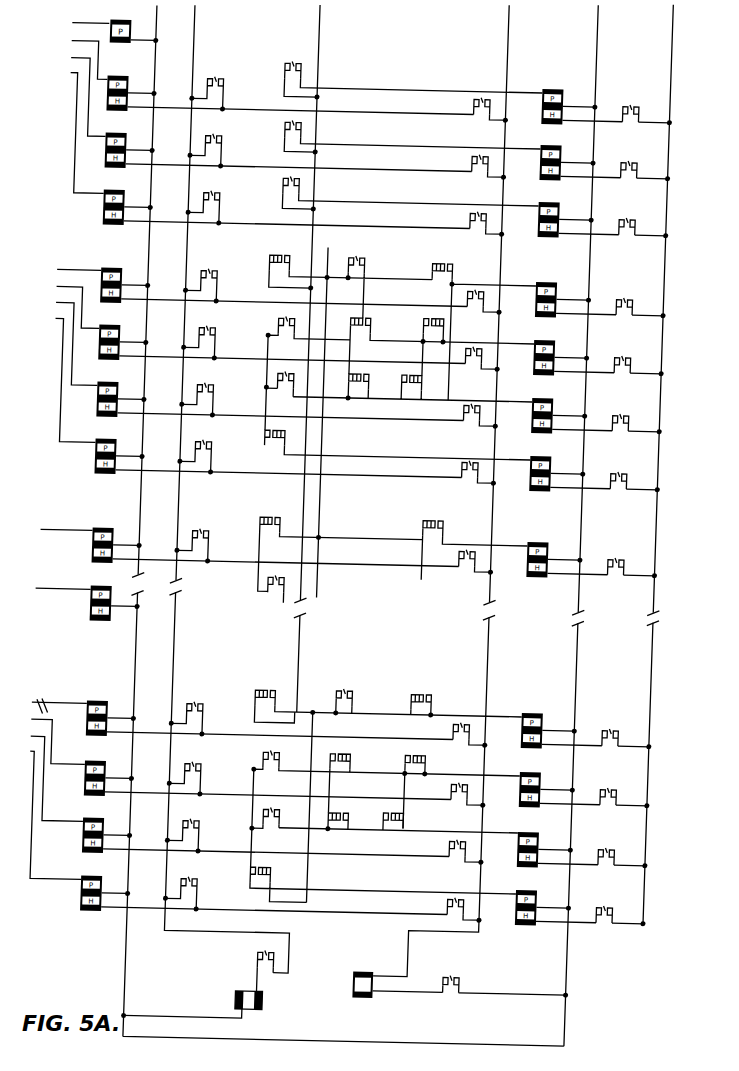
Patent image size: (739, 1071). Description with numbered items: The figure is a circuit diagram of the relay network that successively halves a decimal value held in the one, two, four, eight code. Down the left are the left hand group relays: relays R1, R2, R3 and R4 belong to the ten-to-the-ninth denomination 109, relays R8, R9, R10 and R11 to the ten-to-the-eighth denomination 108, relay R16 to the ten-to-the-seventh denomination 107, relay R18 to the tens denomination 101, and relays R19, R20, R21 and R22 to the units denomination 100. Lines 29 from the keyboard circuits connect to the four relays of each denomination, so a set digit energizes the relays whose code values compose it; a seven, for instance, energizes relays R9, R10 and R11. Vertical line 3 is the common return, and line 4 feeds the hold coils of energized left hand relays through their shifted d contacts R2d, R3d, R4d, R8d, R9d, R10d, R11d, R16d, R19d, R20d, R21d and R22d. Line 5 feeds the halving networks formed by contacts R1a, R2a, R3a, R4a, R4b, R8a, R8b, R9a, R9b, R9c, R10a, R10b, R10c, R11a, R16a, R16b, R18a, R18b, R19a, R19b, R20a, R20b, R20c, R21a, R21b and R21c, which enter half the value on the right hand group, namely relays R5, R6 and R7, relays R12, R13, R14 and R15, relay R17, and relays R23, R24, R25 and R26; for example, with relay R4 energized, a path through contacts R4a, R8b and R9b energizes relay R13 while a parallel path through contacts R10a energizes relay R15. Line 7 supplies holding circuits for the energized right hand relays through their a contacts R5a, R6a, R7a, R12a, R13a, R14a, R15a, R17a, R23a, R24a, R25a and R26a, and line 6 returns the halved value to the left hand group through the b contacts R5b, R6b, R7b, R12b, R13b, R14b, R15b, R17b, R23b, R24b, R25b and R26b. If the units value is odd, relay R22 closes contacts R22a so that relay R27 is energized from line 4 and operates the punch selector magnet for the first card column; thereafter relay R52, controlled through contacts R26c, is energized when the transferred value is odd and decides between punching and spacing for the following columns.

The line 3 is at (157, 22).
The line 4 is at (195, 22).
The line 5 is at (320, 28).
The line 6 is at (509, 26).
The line 7 is at (672, 36).
The lines 29 is at (83, 276).
The units denomination 100 is at (50, 780).
The tens denomination 101 is at (57, 598).
The ten-to-the-seventh denomination 107 is at (66, 541).
The ten-to-the-eighth denomination 108 is at (69, 351).
The ten-to-the-ninth denomination 109 is at (78, 104).
The relay R1 is at (133, 23).
The relay R2 is at (290, 88).
The relay R3 is at (289, 145).
The value 1 relay R4 is at (287, 202).
The relay R5 is at (572, 99).
The relay R6 is at (570, 155).
The relay R7 is at (569, 212).
The relay R8 is at (284, 280).
The relay R9 is at (282, 337).
The relay R10 is at (279, 394).
The relay R11 is at (277, 451).
The relay R12 is at (566, 292).
The relay R13 is at (564, 350).
The relay R14 is at (562, 408).
The relay R15 is at (560, 466).
The relay R16 is at (272, 540).
The relay R17 is at (567, 552).
The relay R18 is at (113, 595).
The relay R19 is at (269, 713).
The relay R20 is at (267, 773).
The relay R21 is at (265, 830).
The 1 value relay R22 is at (263, 888).
The relay R23 is at (552, 723).
The relay R24 is at (550, 782).
The relay R25 is at (548, 842).
The relay R26 is at (546, 900).
The relay R27 is at (268, 990).
The relay R52 is at (396, 976).
The contacts R1a is at (412, 73).
The contacts R2a is at (287, 133).
The contacts R2d is at (208, 85).
The contacts R3a is at (287, 189).
The contacts R3d is at (206, 142).
The contacts R4a is at (292, 418).
The contacts R4b is at (380, 279).
The contacts R4d is at (204, 199).
The contacts R5a is at (642, 105).
The contacts R5b is at (486, 100).
The contacts R6a is at (641, 161).
The contacts R6b is at (483, 157).
The contacts R7a is at (639, 218).
The contacts R7b is at (476, 209).
The contacts R8a is at (287, 333).
The contacts R8b is at (481, 324).
The contacts R8d is at (202, 277).
The contacts R9a is at (288, 386).
The contacts R9b is at (371, 310).
The contacts R9c is at (432, 325).
The contacts R9d is at (200, 334).
The contacts R10a is at (279, 440).
The contacts R10b is at (373, 368).
The contacts R10c is at (412, 399).
The contacts R10d is at (201, 391).
The contacts R11a is at (337, 547).
The contacts R11d is at (199, 448).
The contacts R12a is at (635, 298).
The contacts R12b is at (478, 294).
The contacts R13a is at (633, 356).
The contacts R13b is at (476, 350).
The contacts R14a is at (631, 414).
The contacts R14b is at (474, 407).
The contacts R15a is at (629, 472).
The contacts R15b is at (472, 464).
The contacts R16a is at (277, 590).
The contacts R16b is at (471, 543).
The contacts R16d is at (196, 537).
The contacts R17a is at (626, 559).
The contacts R17b is at (481, 561).
The contacts R18a is at (382, 790).
The contacts R18b is at (349, 695).
The contacts R19a is at (384, 811).
The contacts R19b is at (426, 697).
The contacts R19d is at (190, 710).
The contacts R20a is at (270, 833).
The contacts R20b is at (364, 745).
The contacts R20c is at (428, 754).
The contacts R20d is at (188, 770).
The contacts R21a is at (279, 878).
The contacts R21b is at (366, 805).
The contacts R21c is at (406, 832).
The contacts R21d is at (186, 827).
The contacts R22a is at (280, 947).
The contacts R22d is at (185, 885).
The contacts R23a is at (621, 730).
The contacts R23b is at (462, 726).
The contacts R24a is at (619, 789).
The contacts R24b is at (461, 786).
The contacts R25a is at (617, 849).
The contacts R25b is at (459, 843).
The contacts R26a is at (615, 907).
The contacts R26b is at (457, 901).
The contacts R26c is at (501, 975).